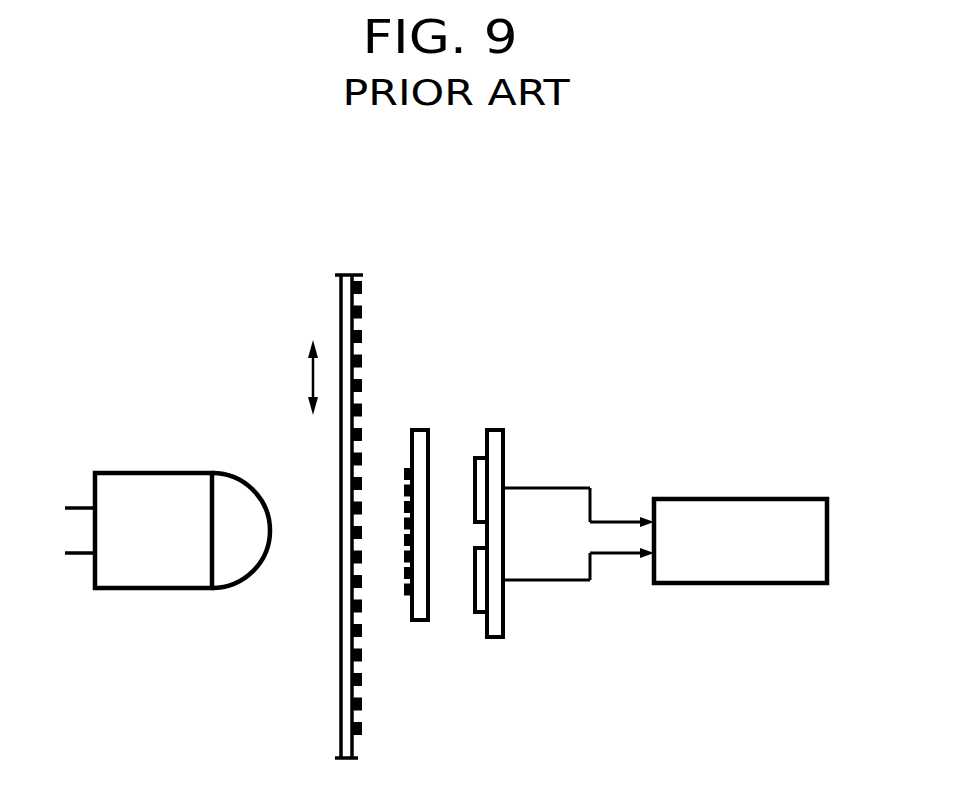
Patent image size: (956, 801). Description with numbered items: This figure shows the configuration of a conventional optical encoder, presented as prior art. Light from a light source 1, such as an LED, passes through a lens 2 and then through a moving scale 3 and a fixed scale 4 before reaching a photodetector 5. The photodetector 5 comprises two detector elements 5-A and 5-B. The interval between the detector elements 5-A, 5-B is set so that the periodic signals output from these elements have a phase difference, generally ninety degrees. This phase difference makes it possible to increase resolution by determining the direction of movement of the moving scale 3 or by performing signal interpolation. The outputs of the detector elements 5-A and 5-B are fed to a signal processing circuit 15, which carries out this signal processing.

The light source 1 is at (151, 574).
The lens 2 is at (233, 573).
The moving scale 3 is at (341, 724).
The fixed scale 4 is at (414, 622).
The photodetector 5 is at (503, 627).
The detector element 5-A is at (476, 465).
The detector element 5-B is at (473, 588).
The signal processing circuit 15 is at (709, 497).